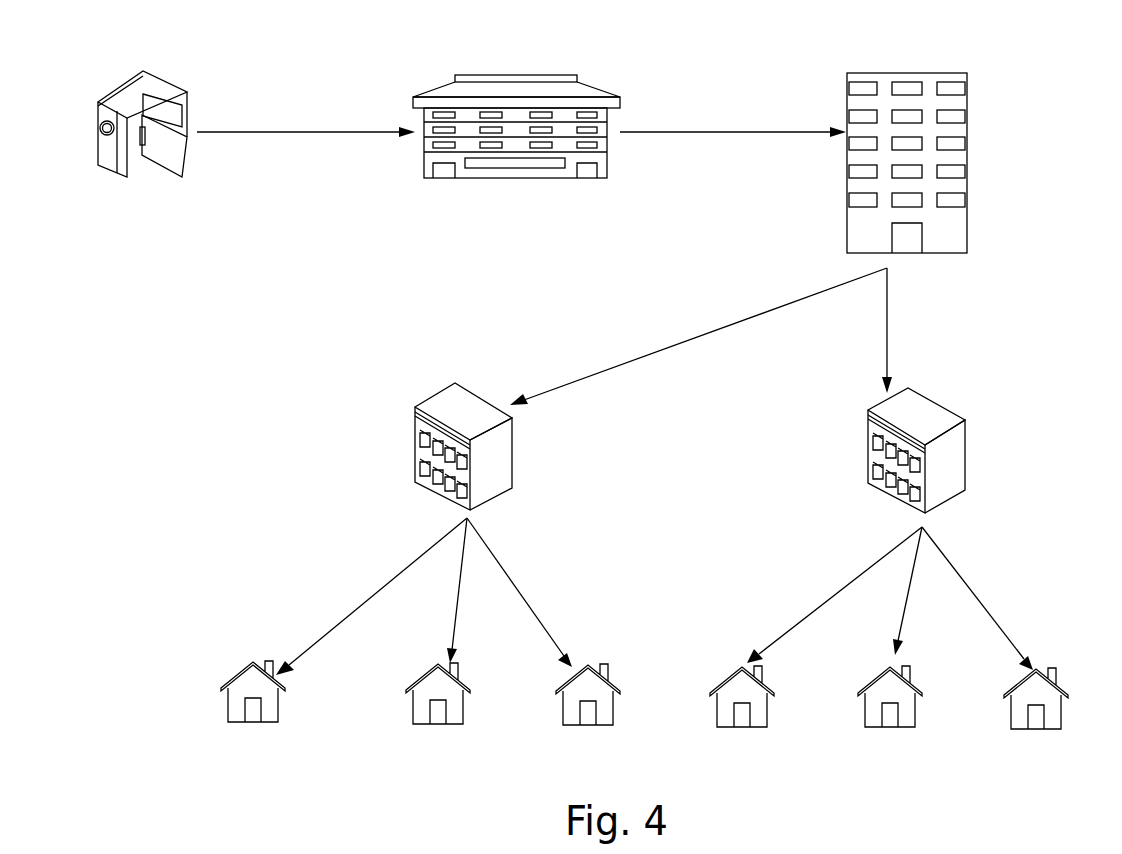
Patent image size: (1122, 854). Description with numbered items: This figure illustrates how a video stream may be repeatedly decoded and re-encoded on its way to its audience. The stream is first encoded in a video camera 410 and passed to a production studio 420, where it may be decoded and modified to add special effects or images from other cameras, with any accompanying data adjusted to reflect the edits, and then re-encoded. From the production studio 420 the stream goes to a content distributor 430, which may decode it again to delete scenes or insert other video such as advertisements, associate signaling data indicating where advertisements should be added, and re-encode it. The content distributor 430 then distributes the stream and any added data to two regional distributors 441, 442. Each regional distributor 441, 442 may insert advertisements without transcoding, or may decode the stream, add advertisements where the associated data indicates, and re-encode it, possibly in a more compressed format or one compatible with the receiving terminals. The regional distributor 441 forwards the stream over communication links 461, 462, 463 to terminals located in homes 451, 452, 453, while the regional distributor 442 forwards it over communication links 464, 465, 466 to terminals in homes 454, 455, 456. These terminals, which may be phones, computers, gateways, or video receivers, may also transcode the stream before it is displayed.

The camera 410 is at (161, 107).
The production studio 420 is at (516, 112).
The content distributor 430 is at (912, 146).
The regional distributor 441 is at (466, 434).
The regional distributor 442 is at (920, 436).
The home 451 is at (280, 707).
The home 452 is at (467, 708).
The home 453 is at (617, 709).
The home 454 is at (769, 711).
The home 455 is at (918, 711).
The home 456 is at (1059, 712).
The communication link 461 is at (371, 596).
The communication link 462 is at (486, 590).
The communication link 463 is at (536, 592).
The communication link 464 is at (834, 595).
The communication link 465 is at (932, 591).
The communication link 466 is at (985, 598).